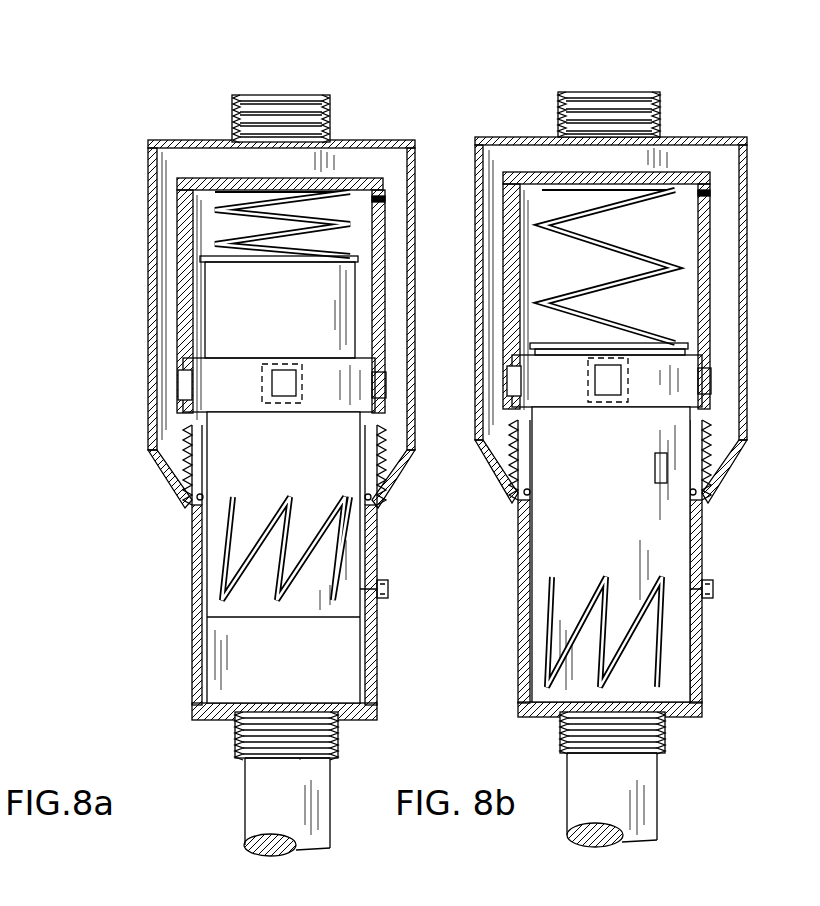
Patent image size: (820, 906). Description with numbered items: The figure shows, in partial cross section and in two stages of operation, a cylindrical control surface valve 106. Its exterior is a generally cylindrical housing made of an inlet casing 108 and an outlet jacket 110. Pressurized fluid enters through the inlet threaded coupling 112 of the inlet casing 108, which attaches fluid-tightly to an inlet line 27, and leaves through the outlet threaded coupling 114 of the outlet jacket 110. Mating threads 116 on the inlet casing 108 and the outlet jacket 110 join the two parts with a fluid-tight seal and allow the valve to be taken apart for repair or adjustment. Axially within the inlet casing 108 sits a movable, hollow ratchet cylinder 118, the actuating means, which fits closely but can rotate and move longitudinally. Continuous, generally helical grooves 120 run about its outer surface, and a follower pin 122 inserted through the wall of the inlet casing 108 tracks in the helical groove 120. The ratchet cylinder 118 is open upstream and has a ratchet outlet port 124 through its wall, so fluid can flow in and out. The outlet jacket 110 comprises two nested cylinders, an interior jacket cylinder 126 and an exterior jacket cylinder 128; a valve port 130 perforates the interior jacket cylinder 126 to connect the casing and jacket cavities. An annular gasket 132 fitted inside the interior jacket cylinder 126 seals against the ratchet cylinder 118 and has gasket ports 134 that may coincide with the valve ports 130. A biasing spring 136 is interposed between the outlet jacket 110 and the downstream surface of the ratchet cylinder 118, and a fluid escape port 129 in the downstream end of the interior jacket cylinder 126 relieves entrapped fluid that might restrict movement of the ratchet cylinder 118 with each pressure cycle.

In FIG. 8A, the cylindrical control surface valve 106 is at (152, 105).
In FIG. 8B, the cylindrical control surface valve 106 is at (520, 103).
In FIG. 8B, the inlet casing 108 is at (700, 715).
In FIG. 8B, the outlet jacket 110 is at (718, 138).
In FIG. 8A, the inlet threaded coupling 112 is at (262, 725).
In FIG. 8A, the outlet threaded coupling 114 is at (278, 108).
In FIG. 8B, the outlet threaded coupling 114 is at (609, 114).
In FIG. 8A, the mating threads 116 is at (183, 500).
In FIG. 8B, the mating threads 116 is at (610, 460).
In FIG. 8A, the ratchet cylinder 118 is at (248, 605).
In FIG. 8B, the ratchet cylinder 118 is at (672, 533).
In FIG. 8A, the helical grooves 120 is at (340, 550).
In FIG. 8B, the helical grooves 120 is at (553, 628).
In FIG. 8A, the follower pin 122 is at (385, 593).
In FIG. 8B, the follower pin 122 is at (701, 589).
In FIG. 8B, the ratchet outlet port 124 is at (667, 467).
In FIG. 8A, the interior jacket cylinder 126 is at (185, 285).
In FIG. 8B, the interior jacket cylinder 126 is at (705, 226).
In FIG. 8A, the exterior jacket cylinder 128 is at (410, 236).
In FIG. 8B, the exterior jacket cylinder 128 is at (478, 230).
In FIG. 8A, the fluid escape port 129 is at (385, 200).
In FIG. 8B, the fluid escape port 129 is at (710, 192).
In FIG. 8A, the valve port 130 is at (375, 385).
In FIG. 8B, the valve port 130 is at (512, 378).
In FIG. 8A, the annular gasket 132 is at (218, 398).
In FIG. 8B, the annular gasket 132 is at (670, 372).
In FIG. 8A, the gasket ports 134 is at (280, 382).
In FIG. 8A, the biasing spring 136 is at (240, 212).
In FIG. 8B, the biasing spring 136 is at (608, 266).
In FIG. 8A, the inlet line 27 is at (255, 770).
In FIG. 8B, the inlet line 27 is at (648, 770).